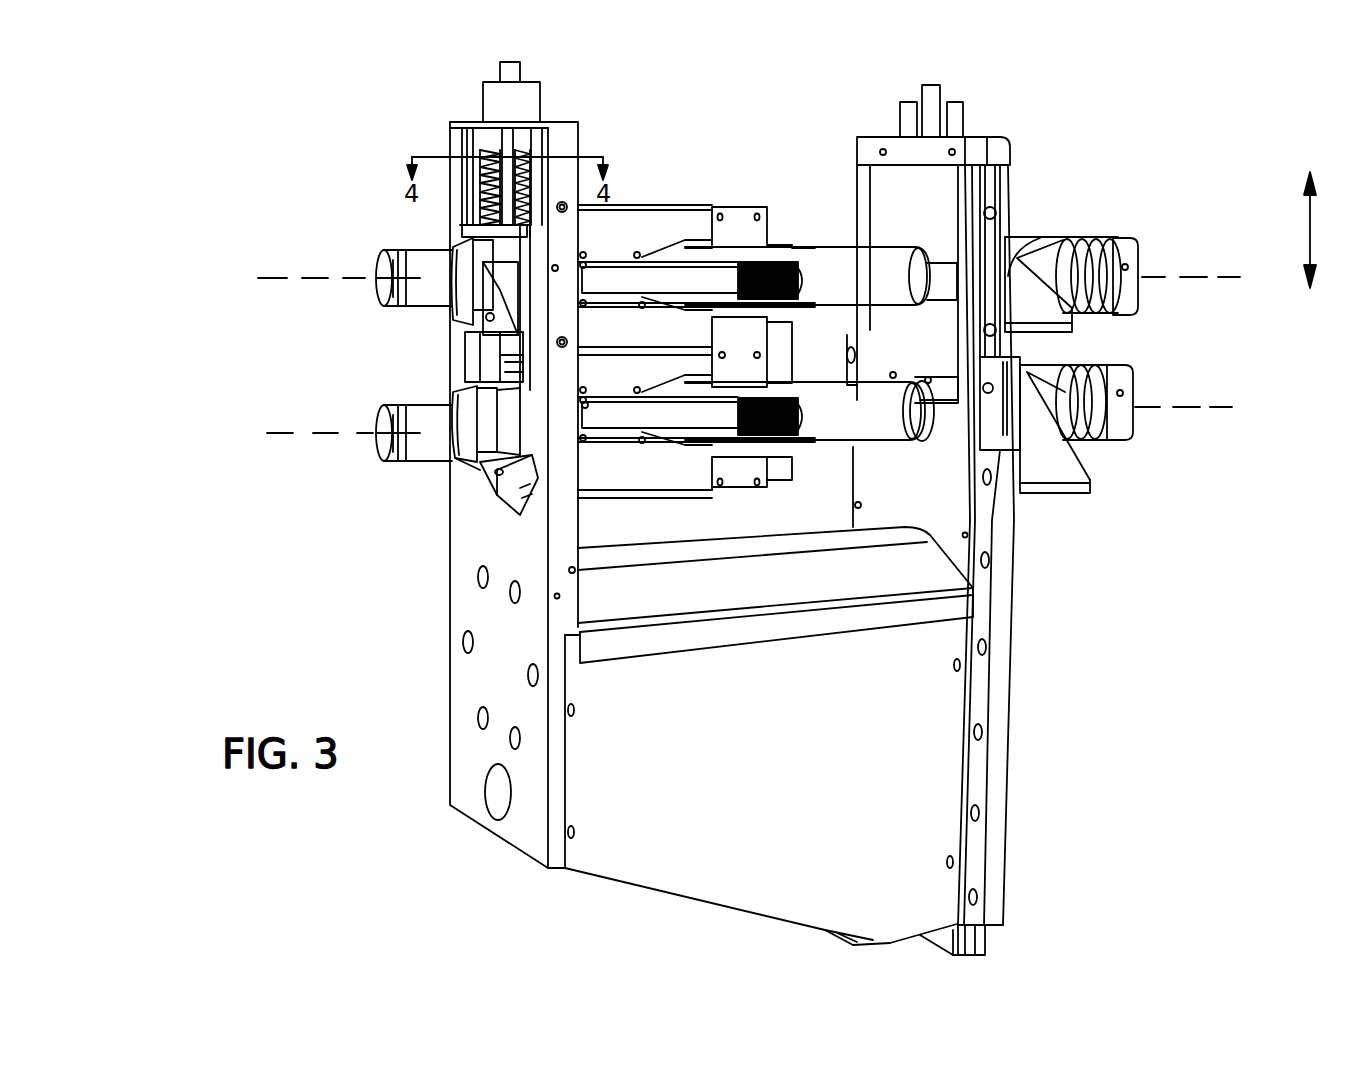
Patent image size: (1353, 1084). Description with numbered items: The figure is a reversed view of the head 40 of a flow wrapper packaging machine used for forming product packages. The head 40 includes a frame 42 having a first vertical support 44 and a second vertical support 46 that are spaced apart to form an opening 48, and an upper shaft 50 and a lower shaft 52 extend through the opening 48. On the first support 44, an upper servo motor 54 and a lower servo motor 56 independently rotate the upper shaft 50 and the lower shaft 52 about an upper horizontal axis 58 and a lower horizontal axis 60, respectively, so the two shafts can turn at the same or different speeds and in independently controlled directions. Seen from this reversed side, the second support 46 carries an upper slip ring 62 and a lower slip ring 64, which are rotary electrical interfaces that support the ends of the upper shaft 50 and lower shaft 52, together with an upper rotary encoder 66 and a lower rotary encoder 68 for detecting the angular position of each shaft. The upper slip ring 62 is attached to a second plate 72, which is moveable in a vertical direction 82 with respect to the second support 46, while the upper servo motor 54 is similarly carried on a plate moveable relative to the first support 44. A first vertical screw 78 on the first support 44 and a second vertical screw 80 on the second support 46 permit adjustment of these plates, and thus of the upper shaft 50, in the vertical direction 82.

The head 40 is at (201, 108).
The frame 42 is at (655, 866).
The first vertical support 44 is at (990, 862).
The second vertical support 46 is at (523, 830).
The opening 48 is at (595, 533).
The upper shaft 50 is at (833, 266).
The lower shaft 52 is at (827, 428).
The upper servo motor 54 is at (1107, 235).
The lower servo motor 56 is at (1120, 447).
The upper horizontal axis 58 is at (279, 278).
The lower horizontal axis 60 is at (279, 433).
The upper slip ring 62 is at (445, 250).
The lower slip ring 64 is at (455, 460).
The upper rotary encoder 66 is at (460, 347).
The lower rotary encoder 68 is at (487, 493).
The second plate 72 is at (512, 250).
The first vertical screw 78 is at (955, 92).
The second vertical screw 80 is at (482, 160).
The vertical direction 82 is at (1308, 232).